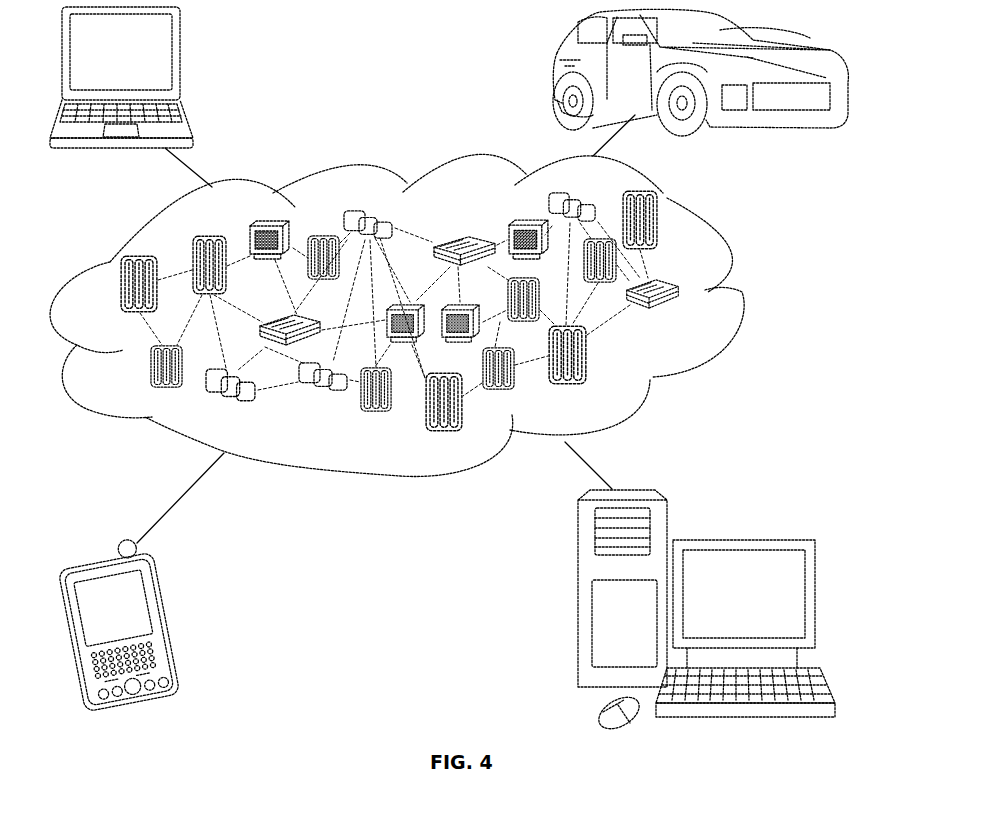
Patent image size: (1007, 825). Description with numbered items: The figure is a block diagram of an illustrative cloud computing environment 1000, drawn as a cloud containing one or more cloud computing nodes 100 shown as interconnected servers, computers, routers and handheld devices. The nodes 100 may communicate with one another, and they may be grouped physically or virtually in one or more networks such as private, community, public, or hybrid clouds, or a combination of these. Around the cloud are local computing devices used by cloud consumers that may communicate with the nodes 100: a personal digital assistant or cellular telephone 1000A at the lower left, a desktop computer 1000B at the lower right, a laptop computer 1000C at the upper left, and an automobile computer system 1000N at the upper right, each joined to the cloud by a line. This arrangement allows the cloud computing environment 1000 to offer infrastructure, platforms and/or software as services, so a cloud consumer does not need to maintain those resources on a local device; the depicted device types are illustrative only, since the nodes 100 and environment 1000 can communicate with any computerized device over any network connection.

The cloud computing nodes 100 is at (692, 318).
The cloud computing environment 1000 is at (742, 293).
The personal digital assistant (PDA) or cellular telephone 1000A is at (170, 621).
The desktop computer 1000B is at (742, 538).
The laptop computer 1000C is at (180, 60).
The automobile computer system 1000N is at (553, 73).